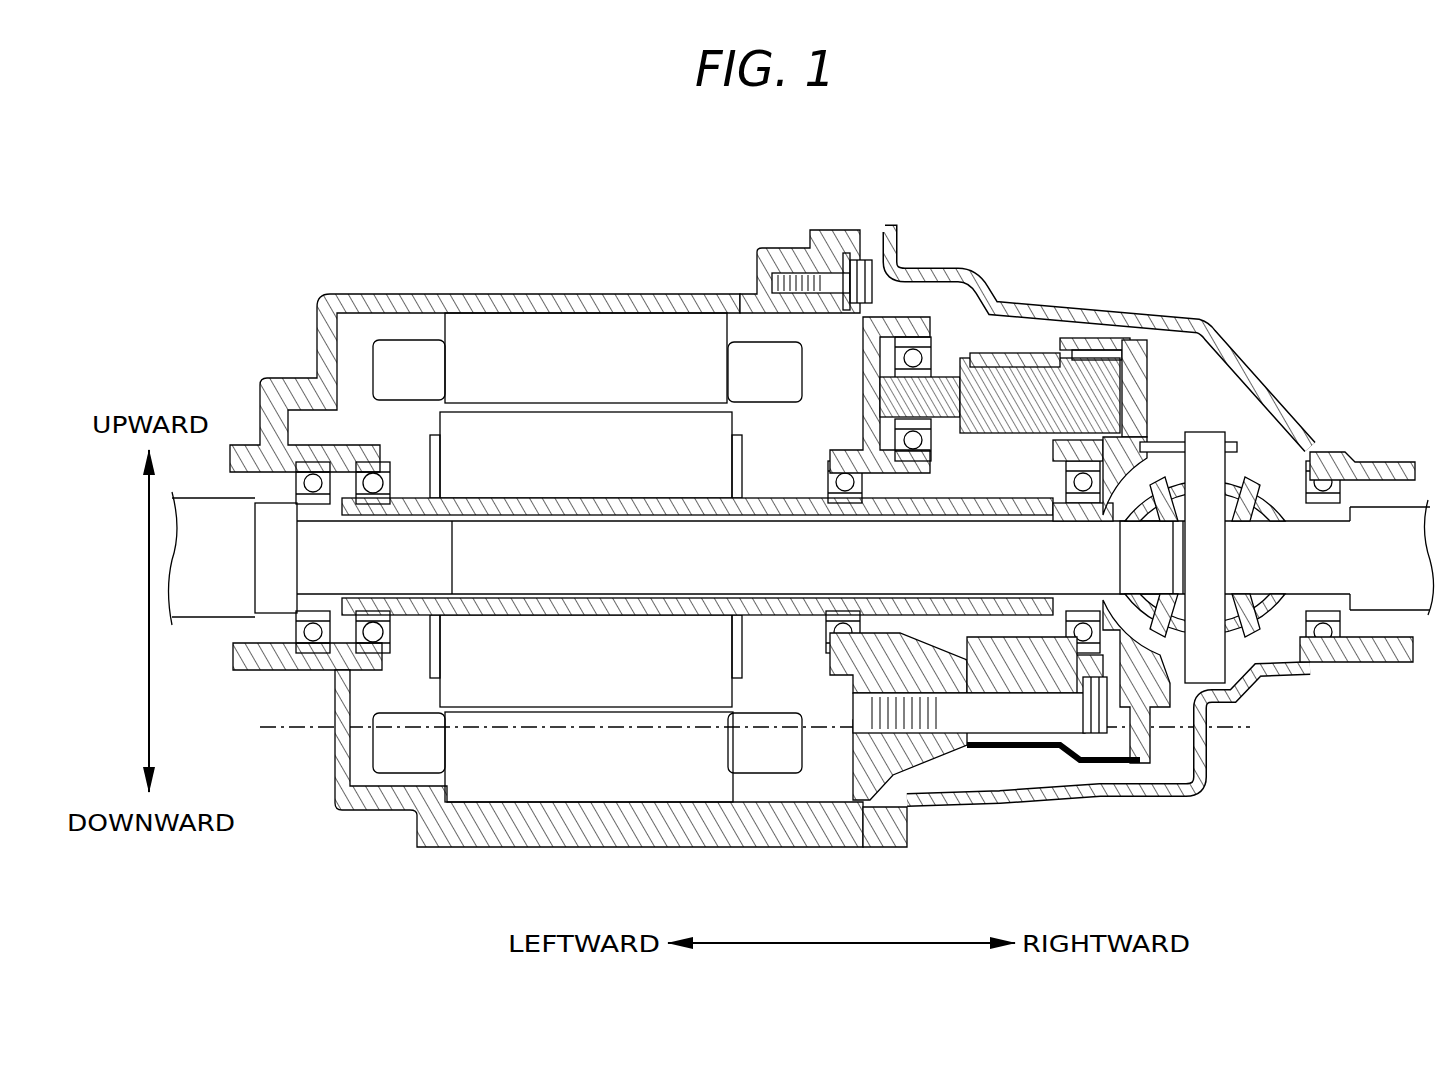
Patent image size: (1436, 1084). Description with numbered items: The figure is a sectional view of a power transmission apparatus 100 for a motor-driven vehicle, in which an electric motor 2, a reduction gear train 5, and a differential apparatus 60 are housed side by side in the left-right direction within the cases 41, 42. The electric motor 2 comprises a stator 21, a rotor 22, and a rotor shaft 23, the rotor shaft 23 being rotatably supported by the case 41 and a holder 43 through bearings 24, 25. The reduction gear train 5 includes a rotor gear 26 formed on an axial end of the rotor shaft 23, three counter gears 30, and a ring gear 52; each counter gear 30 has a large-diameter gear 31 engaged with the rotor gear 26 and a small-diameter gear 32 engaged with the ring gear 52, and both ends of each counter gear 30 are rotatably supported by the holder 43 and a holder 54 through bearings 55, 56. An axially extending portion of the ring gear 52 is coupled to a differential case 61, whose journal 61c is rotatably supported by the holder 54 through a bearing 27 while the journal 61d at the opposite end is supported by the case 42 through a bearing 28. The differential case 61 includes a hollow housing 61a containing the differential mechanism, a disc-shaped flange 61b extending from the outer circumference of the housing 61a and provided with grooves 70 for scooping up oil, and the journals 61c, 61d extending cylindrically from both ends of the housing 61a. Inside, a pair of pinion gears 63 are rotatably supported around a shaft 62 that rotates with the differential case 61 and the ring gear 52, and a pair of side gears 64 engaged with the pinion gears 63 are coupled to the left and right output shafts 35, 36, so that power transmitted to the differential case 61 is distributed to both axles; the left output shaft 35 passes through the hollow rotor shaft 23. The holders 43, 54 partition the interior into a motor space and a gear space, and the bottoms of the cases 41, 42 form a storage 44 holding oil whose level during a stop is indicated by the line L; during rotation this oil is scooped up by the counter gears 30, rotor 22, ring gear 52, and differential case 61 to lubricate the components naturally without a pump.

The power transmission apparatus 100 is at (228, 278).
The electric motor 2 is at (362, 338).
The stator 21 is at (587, 526).
The rotor 22 is at (592, 403).
The rotor shaft 23 is at (648, 497).
The bearing 24 is at (388, 478).
The bearing 25 is at (828, 470).
The rotor gear 26 is at (930, 605).
The bearing 27 is at (1066, 494).
The bearing 28 is at (1330, 544).
The counter gear 30 is at (1097, 310).
The large-diameter gear 31 is at (960, 350).
The small-diameter gear 32 is at (1000, 353).
The left output shaft 35 is at (790, 615).
The right output shaft 36 is at (1413, 507).
The case 41 is at (338, 810).
The case 42 is at (1140, 795).
The holder 43 is at (893, 848).
The storage 44 is at (823, 799).
The reduction gear train 5 is at (888, 290).
The ring gear 52 is at (1000, 358).
The holder 54 is at (1070, 733).
The bearing 55 is at (870, 342).
The bearing 56 is at (1103, 340).
The differential apparatus 60 is at (1270, 540).
The differential case 61 is at (1168, 557).
The housing 61a is at (1270, 668).
The flange 61b is at (1158, 755).
The journal 61c is at (1062, 614).
The journal 61d is at (1355, 660).
The shaft 62 is at (1240, 440).
The pinion gear 63 is at (1290, 480).
The side gear 64 is at (1330, 452).
The groove 70 is at (1210, 425).
The axis L is at (262, 727).